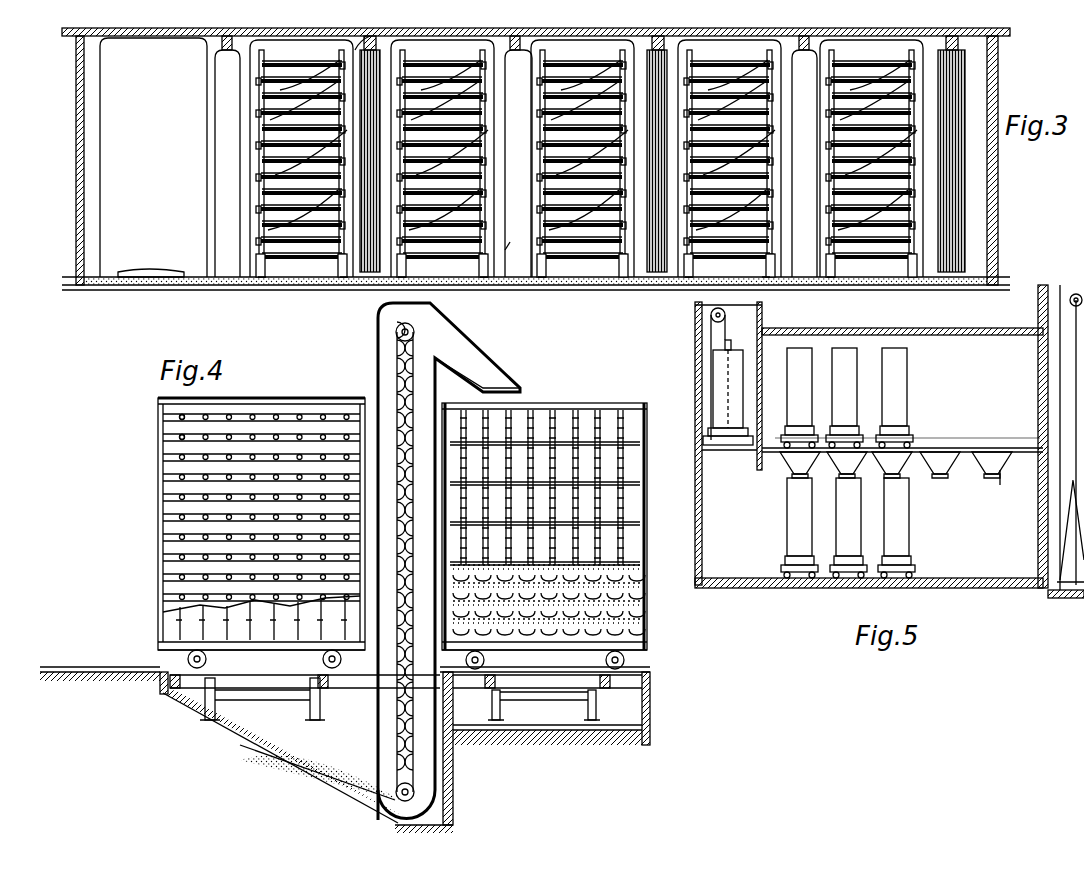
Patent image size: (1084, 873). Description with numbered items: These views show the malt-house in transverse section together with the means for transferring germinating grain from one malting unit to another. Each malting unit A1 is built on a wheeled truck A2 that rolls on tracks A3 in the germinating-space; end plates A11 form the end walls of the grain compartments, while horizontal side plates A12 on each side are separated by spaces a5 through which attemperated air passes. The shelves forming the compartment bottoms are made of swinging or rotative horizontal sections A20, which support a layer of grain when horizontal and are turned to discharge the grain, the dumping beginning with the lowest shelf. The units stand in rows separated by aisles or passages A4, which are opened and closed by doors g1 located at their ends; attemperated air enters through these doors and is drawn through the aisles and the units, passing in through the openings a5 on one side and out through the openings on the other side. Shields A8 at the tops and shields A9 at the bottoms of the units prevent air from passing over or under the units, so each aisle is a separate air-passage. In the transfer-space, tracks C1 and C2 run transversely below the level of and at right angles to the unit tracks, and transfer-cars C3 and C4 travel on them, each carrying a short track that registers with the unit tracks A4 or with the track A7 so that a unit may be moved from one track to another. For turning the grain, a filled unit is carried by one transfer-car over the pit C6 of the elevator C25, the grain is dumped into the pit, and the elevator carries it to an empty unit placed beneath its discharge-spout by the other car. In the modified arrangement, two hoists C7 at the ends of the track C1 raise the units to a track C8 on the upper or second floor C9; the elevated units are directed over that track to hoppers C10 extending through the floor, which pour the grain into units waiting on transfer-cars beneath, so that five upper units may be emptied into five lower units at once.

In FIG. 3, the tray rack / container car A1 is at (415, 56).
In FIG. 4, the tray rack / container car A1 is at (237, 524).
In FIG. 5, the tray rack / container car A1 is at (870, 375).
In FIG. 3, the wheeled truck A2 is at (482, 277).
In FIG. 4, the wheeled truck A2 is at (158, 648).
In FIG. 5, the wheeled truck A2 is at (907, 432).
In FIG. 3, the tracks A3 is at (260, 277).
In FIG. 3, the aisles or passages A4 is at (370, 278).
In FIG. 3, the track A7 is at (185, 275).
In FIG. 3, the shield A8 is at (355, 48).
In FIG. 3, the shield A9 is at (503, 260).
In FIG. 4, the end plates A11 is at (647, 422).
In FIG. 4, the horizontal side plates A12 is at (268, 425).
In FIG. 4, the swinging or rotative horizontal shelf-sections A20 is at (270, 630).
In FIG. 4, the spaces a5 is at (160, 436).
In FIG. 3, the doors g1 is at (842, 26).
In FIG. 4, the track C1 is at (218, 717).
In FIG. 4, the track C2 is at (500, 724).
In FIG. 4, the transfer-car C3 is at (175, 685).
In FIG. 4, the transfer-car C4 is at (594, 716).
In FIG. 4, the pit C6 is at (300, 760).
In FIG. 5, the elevator or hoist C7 is at (727, 452).
In FIG. 5, the track C8 is at (1015, 448).
In FIG. 5, the upper or second floor C9 is at (1020, 455).
In FIG. 5, the hoppers C10 is at (795, 458).
In FIG. 4, the elevator C25 is at (261, 377).